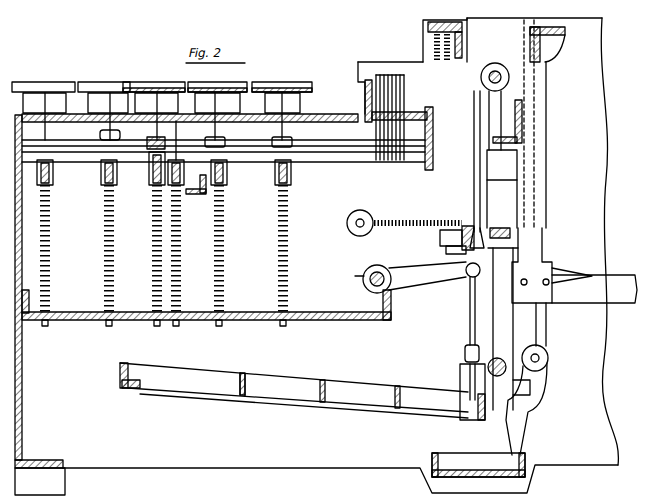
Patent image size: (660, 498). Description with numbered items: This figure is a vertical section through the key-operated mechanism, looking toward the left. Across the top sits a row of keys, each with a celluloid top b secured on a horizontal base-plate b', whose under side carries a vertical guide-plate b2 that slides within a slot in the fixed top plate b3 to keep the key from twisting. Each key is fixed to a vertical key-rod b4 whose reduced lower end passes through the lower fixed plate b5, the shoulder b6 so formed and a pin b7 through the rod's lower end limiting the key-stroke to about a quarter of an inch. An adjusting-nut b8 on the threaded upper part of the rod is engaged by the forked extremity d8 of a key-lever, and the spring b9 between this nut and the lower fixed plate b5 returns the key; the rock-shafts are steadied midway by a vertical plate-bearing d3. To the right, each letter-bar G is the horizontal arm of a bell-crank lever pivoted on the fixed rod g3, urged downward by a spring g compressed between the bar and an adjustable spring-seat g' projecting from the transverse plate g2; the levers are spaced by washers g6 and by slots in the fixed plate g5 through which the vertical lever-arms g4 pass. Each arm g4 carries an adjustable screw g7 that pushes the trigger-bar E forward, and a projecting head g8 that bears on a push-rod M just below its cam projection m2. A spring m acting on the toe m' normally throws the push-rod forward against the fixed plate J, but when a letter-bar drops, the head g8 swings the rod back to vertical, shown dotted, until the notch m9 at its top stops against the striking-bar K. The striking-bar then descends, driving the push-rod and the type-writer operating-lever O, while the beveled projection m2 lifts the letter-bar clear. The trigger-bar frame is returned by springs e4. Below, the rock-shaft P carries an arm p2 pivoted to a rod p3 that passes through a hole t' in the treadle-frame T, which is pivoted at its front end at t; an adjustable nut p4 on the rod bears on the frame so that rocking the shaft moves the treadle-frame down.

The celluloid top b is at (170, 81).
The horizontal base-plate b' is at (178, 100).
The vertical guide-plate b2 is at (295, 117).
The fixed top plate b3 is at (309, 122).
The vertical key-rod b4 is at (290, 212).
The lower fixed plate b5 is at (300, 312).
The shoulder b6 is at (222, 306).
The pin b7 is at (112, 322).
The adjusting-nut b8 is at (296, 156).
The spring b9 is at (290, 246).
The vertical plate-bearing d3 is at (203, 195).
The forked extremity d8 is at (270, 165).
The letter-bar G is at (377, 66).
The spring g is at (464, 47).
The adjustable spring-seat g' is at (474, 29).
The transverse plate g2 is at (428, 24).
The fixed rod g3 is at (488, 80).
The vertical lever-arm g4 is at (474, 172).
The fixed plate g5 is at (473, 150).
The washers g6 is at (496, 63).
The adjustable screw g7 is at (445, 235).
The projecting head g8 is at (517, 190).
The notch m9 is at (498, 62).
The striking-bar K is at (565, 33).
The fixed bar or plate J is at (522, 120).
The push-rod M is at (536, 172).
The cam projection m2 is at (542, 186).
The toe or projection m' is at (569, 252).
The spring m is at (572, 269).
The operating-lever O is at (594, 289).
The lever h' is at (536, 379).
The trigger-bar E is at (490, 246).
The springs e4 is at (400, 223).
The rock-shaft P is at (365, 274).
The arm p2 is at (425, 270).
The rod p3 is at (470, 328).
The adjustable nut p4 is at (465, 352).
The hole t' is at (459, 392).
The treadle-frame T is at (362, 393).
The pivot t is at (125, 394).